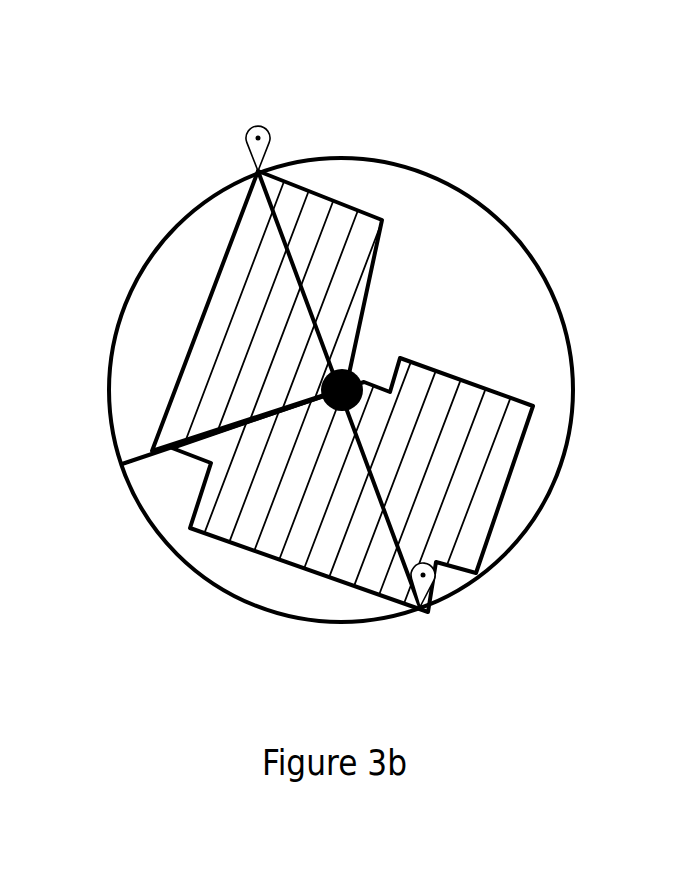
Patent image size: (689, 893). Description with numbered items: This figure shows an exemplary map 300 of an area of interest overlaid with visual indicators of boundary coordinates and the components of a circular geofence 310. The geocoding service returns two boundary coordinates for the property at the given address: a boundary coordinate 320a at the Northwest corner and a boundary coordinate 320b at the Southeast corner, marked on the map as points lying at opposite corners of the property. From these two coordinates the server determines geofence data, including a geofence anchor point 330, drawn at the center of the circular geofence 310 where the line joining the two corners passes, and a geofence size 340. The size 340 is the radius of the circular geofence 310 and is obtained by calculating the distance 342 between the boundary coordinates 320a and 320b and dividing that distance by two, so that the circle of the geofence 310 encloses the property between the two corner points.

The map 300 is at (350, 38).
The circular geofence 310 is at (565, 458).
The boundary coordinate 320a is at (258, 171).
The boundary coordinate 320b is at (422, 608).
The geofence anchor point 330 is at (350, 368).
The geofence size 340 is at (213, 435).
The distance 342 is at (387, 497).